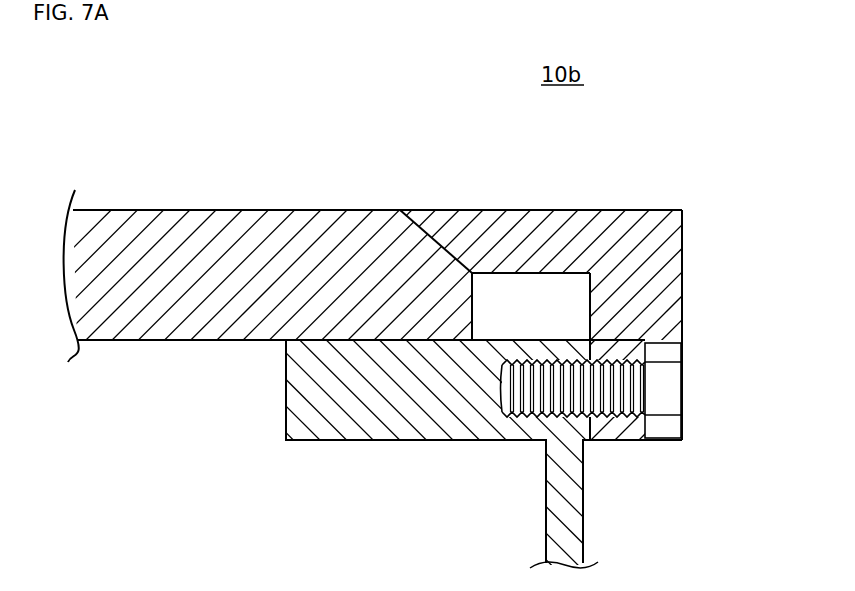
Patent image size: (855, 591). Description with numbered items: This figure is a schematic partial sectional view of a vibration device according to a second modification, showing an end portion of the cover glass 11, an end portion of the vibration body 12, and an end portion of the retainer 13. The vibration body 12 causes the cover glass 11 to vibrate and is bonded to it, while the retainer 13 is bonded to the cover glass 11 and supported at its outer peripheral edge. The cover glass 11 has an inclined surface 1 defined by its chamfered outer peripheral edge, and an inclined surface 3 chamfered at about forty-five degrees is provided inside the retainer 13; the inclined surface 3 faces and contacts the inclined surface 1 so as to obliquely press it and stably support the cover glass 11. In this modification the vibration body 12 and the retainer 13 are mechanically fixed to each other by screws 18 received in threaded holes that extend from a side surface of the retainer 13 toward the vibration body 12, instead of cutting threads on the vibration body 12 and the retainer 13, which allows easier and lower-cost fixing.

The cover glass 11 is at (173, 237).
The vibration body 12 is at (400, 428).
The retainer 13 is at (664, 257).
The screw 18 is at (664, 407).
The inclined surface 3 is at (430, 250).
The inclined surface 1 is at (441, 233).